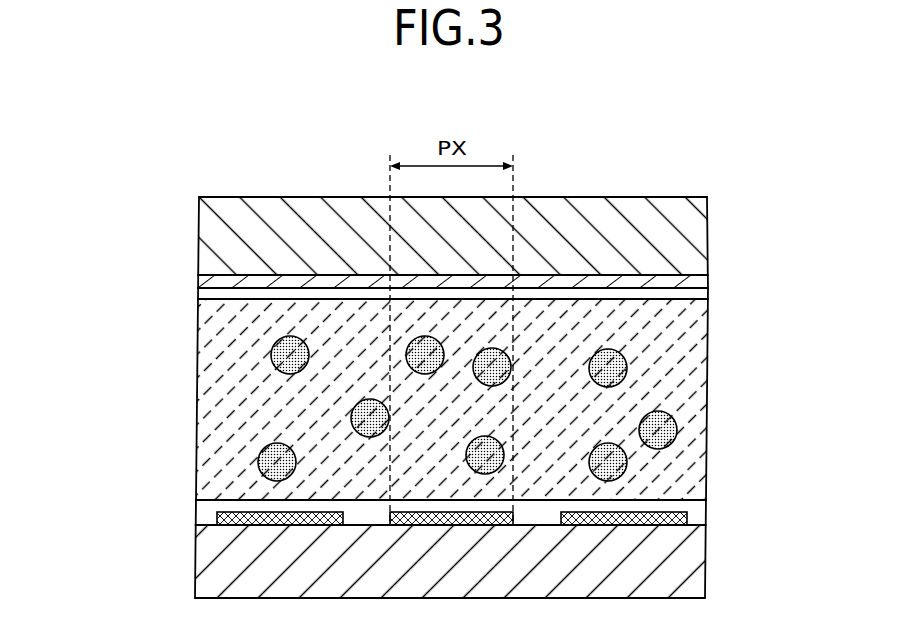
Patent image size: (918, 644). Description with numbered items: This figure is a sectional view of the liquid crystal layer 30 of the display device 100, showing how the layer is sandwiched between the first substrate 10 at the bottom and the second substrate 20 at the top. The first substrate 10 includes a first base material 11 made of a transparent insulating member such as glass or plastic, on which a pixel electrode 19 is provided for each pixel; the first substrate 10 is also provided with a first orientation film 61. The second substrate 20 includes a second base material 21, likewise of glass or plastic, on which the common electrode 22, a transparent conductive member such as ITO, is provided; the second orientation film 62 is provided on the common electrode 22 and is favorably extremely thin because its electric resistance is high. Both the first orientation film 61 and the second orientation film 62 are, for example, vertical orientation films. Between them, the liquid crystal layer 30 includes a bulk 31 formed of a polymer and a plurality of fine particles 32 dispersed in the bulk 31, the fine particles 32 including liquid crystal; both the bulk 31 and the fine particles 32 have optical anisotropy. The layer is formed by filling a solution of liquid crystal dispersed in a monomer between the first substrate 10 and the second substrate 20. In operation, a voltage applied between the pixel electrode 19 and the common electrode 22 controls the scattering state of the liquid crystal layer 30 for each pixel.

The display device 100 is at (628, 169).
The first substrate 10 is at (153, 500).
The first base material 11 is at (693, 562).
The pixel electrode 19 is at (687, 520).
The second substrate 20 is at (153, 197).
The second base material 21 is at (693, 238).
The common electrode 22 is at (695, 282).
The liquid crystal layer 30 is at (153, 298).
The bulk 31 is at (693, 357).
The fine particles 32 is at (677, 423).
The first orientation film 61 is at (693, 507).
The second orientation film 62 is at (697, 292).